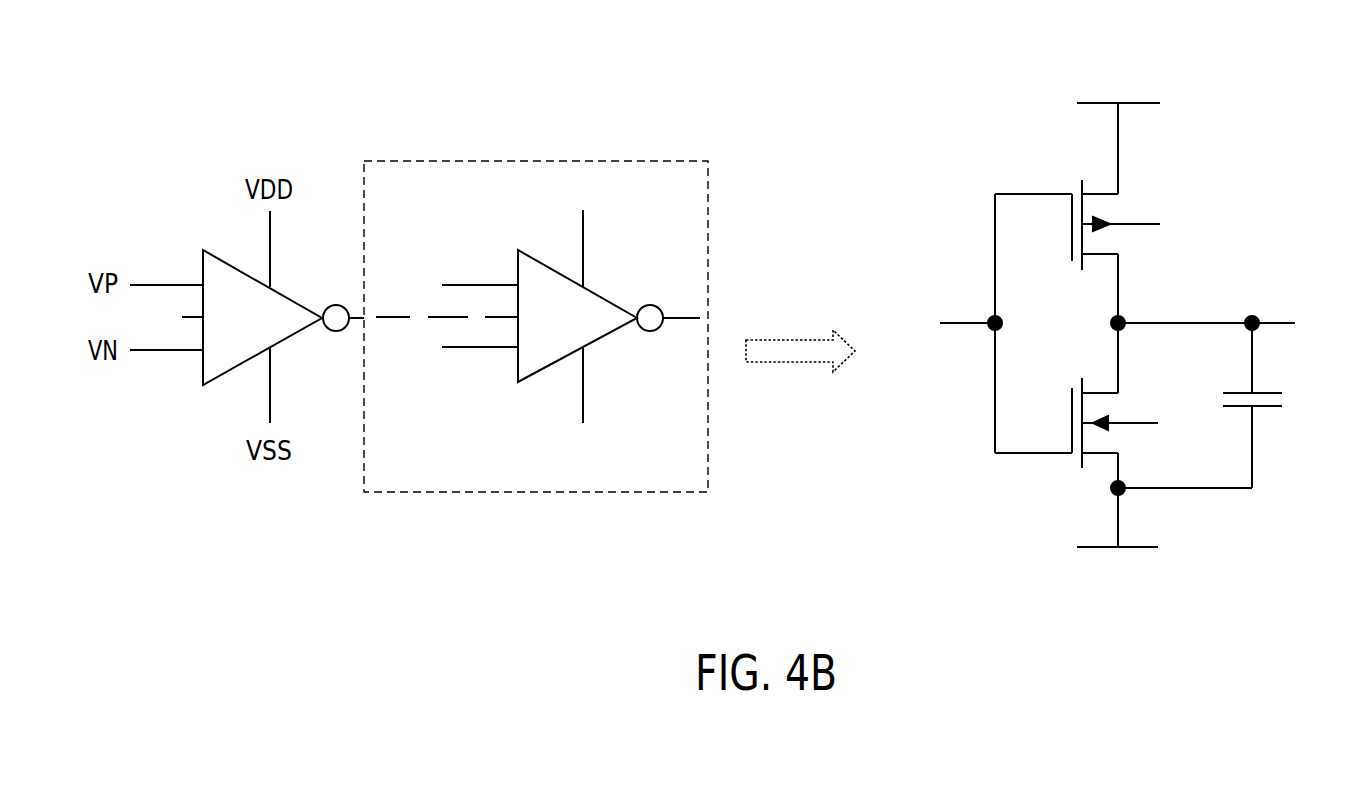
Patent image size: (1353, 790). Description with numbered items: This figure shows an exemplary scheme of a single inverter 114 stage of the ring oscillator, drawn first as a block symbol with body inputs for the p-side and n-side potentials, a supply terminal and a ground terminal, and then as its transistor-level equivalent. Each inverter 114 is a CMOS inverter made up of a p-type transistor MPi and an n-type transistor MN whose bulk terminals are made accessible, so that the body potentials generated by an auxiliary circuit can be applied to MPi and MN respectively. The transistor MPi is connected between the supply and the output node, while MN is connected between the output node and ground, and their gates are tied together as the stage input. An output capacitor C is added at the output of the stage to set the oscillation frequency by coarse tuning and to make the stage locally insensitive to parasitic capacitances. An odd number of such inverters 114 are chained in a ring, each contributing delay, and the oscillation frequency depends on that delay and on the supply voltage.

The inverter 114 is at (383, 112).
The PMOS transistor MPi is at (1079, 212).
The NMOS transistor MN is at (1108, 444).
The output capacitor C is at (1270, 405).